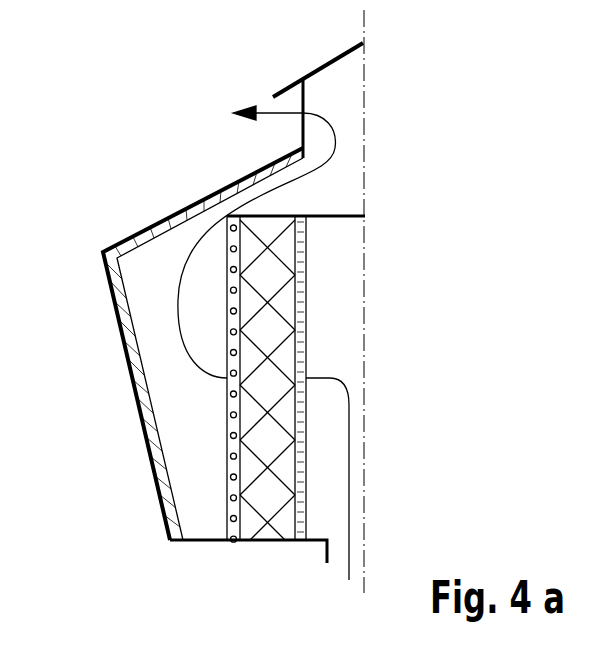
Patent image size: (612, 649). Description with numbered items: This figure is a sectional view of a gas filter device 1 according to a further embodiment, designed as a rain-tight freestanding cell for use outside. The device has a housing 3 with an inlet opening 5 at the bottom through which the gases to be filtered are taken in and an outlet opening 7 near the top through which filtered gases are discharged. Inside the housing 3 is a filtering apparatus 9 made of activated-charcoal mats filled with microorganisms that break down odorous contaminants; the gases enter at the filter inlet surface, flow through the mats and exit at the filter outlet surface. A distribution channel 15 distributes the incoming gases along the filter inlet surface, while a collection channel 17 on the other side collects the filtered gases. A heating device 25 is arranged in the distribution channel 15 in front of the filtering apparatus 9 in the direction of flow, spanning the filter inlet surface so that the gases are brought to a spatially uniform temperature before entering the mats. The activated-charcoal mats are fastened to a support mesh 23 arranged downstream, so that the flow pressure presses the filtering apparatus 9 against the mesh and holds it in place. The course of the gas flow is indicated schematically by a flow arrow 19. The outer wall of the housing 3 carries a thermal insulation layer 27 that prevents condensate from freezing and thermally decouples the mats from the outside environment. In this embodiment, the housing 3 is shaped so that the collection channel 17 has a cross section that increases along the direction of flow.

The gas filter device 1 is at (142, 78).
The housing 3 is at (145, 228).
The inlet opening 5 is at (340, 562).
The outlet opening 7 is at (303, 128).
The filtering apparatus 9 is at (275, 332).
The distribution channel 15 is at (330, 458).
The collection channel 17 is at (173, 408).
The flow arrow 19 is at (337, 146).
The support mesh 23 is at (240, 277).
The heating device 25 is at (303, 365).
The thermal insulation layer 27 is at (128, 330).